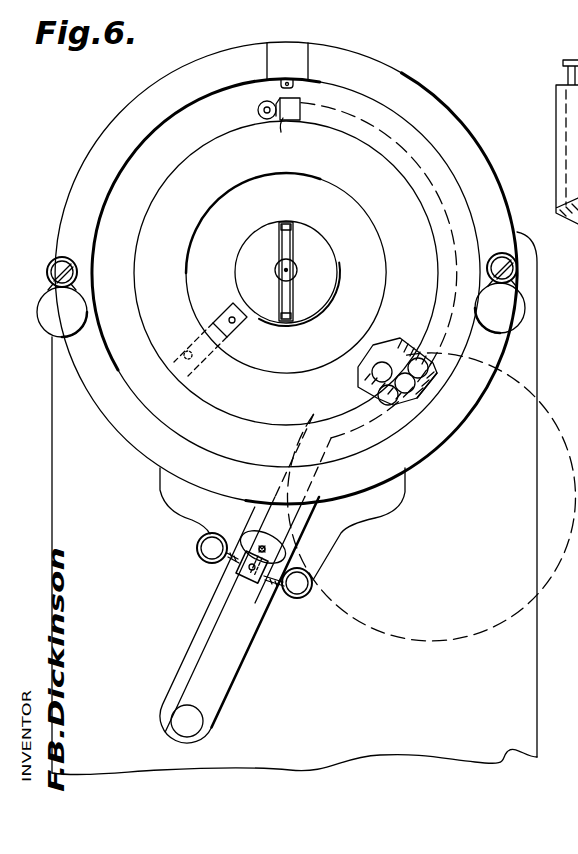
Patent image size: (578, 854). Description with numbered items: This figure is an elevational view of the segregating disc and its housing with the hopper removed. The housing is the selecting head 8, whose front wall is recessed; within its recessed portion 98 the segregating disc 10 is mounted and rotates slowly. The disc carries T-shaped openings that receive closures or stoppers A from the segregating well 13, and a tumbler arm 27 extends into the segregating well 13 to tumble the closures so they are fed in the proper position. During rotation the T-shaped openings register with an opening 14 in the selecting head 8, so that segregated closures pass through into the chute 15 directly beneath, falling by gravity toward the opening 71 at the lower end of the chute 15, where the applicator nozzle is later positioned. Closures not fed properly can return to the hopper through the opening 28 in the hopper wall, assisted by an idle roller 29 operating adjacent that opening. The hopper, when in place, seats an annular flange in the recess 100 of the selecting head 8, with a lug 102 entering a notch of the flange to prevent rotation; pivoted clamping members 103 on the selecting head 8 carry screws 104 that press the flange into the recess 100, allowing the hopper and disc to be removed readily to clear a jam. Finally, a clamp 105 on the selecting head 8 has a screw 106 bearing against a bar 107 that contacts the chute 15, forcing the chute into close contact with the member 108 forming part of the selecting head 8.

The selecting head 8 is at (433, 443).
The segregating disc 10 is at (347, 183).
The segregating well 13 is at (363, 258).
The opening 14 is at (372, 383).
The closures or stoppers A is at (438, 383).
The chute 15 is at (248, 640).
The tumbler arm 27 is at (238, 323).
The opening 28 is at (302, 110).
The idle roller 29 is at (279, 130).
The opening 71 is at (188, 706).
The recessed portion 98 is at (152, 345).
The recess 100 is at (171, 419).
The lug 102 is at (278, 85).
The pivoted clamping members 103 is at (545, 271).
The screws 104 is at (545, 327).
The clamp 105 is at (243, 577).
The screw 106 is at (287, 527).
The bar 107 is at (287, 548).
The member 108 is at (322, 556).